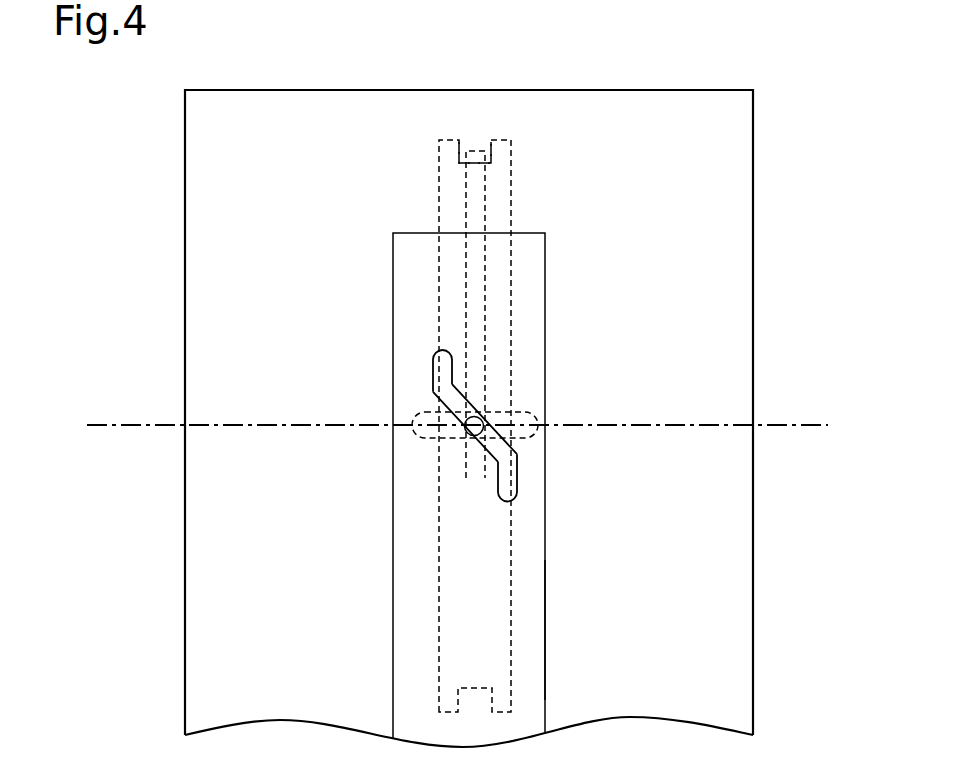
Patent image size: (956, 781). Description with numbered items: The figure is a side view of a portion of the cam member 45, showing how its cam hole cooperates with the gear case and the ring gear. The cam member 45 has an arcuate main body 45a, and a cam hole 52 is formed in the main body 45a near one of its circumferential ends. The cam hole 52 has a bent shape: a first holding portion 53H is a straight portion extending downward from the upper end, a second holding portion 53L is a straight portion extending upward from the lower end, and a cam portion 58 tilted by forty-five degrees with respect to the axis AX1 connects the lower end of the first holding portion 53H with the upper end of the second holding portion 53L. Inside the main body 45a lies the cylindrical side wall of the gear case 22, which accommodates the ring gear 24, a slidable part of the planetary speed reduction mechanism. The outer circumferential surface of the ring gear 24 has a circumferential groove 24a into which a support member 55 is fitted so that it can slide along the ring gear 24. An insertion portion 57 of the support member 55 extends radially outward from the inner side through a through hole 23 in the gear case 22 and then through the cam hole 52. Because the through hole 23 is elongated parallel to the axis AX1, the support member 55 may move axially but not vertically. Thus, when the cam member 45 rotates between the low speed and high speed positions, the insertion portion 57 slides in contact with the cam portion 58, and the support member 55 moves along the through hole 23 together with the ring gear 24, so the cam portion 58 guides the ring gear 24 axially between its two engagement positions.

The gear case 22 is at (643, 105).
The axis of the output shaft AX1 is at (721, 424).
The cam member 45 is at (545, 543).
The main body 45a is at (530, 622).
The ring gear 24 is at (513, 152).
The groove 24a is at (462, 142).
The support member 55 is at (487, 192).
The through hole 23 is at (531, 412).
The cam portion 58 is at (502, 425).
The cam hole 52 is at (502, 425).
The first holding portion 53H is at (433, 366).
The second holding portion 53L is at (517, 485).
The insertion portion 57 is at (474, 438).